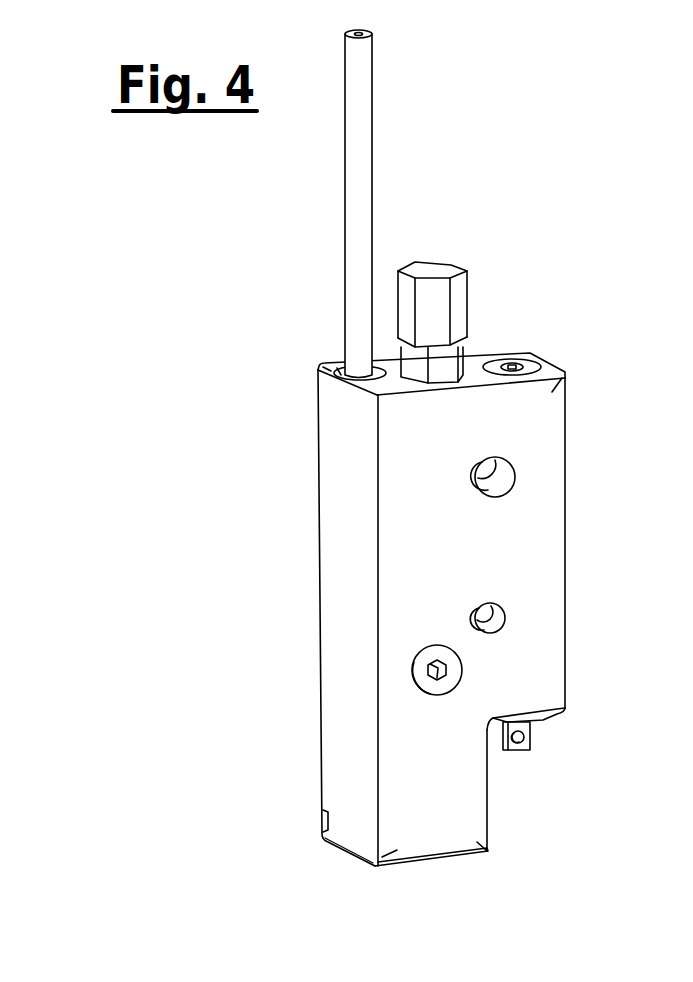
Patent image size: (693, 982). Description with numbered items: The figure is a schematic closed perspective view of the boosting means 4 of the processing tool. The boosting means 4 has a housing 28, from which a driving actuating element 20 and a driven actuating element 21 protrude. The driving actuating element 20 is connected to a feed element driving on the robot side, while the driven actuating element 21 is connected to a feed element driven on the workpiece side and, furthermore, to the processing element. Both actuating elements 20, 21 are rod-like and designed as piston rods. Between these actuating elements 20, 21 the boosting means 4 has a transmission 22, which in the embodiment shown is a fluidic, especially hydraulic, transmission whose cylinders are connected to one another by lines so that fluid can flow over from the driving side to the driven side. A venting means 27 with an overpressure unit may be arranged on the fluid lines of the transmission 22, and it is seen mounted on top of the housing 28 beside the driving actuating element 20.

The boosting means 4 is at (305, 741).
The driving actuating element 20 is at (358, 242).
The driven actuating element 21 is at (520, 747).
The transmission 22 is at (345, 603).
The venting means 27 is at (432, 270).
The housing 28 is at (517, 559).